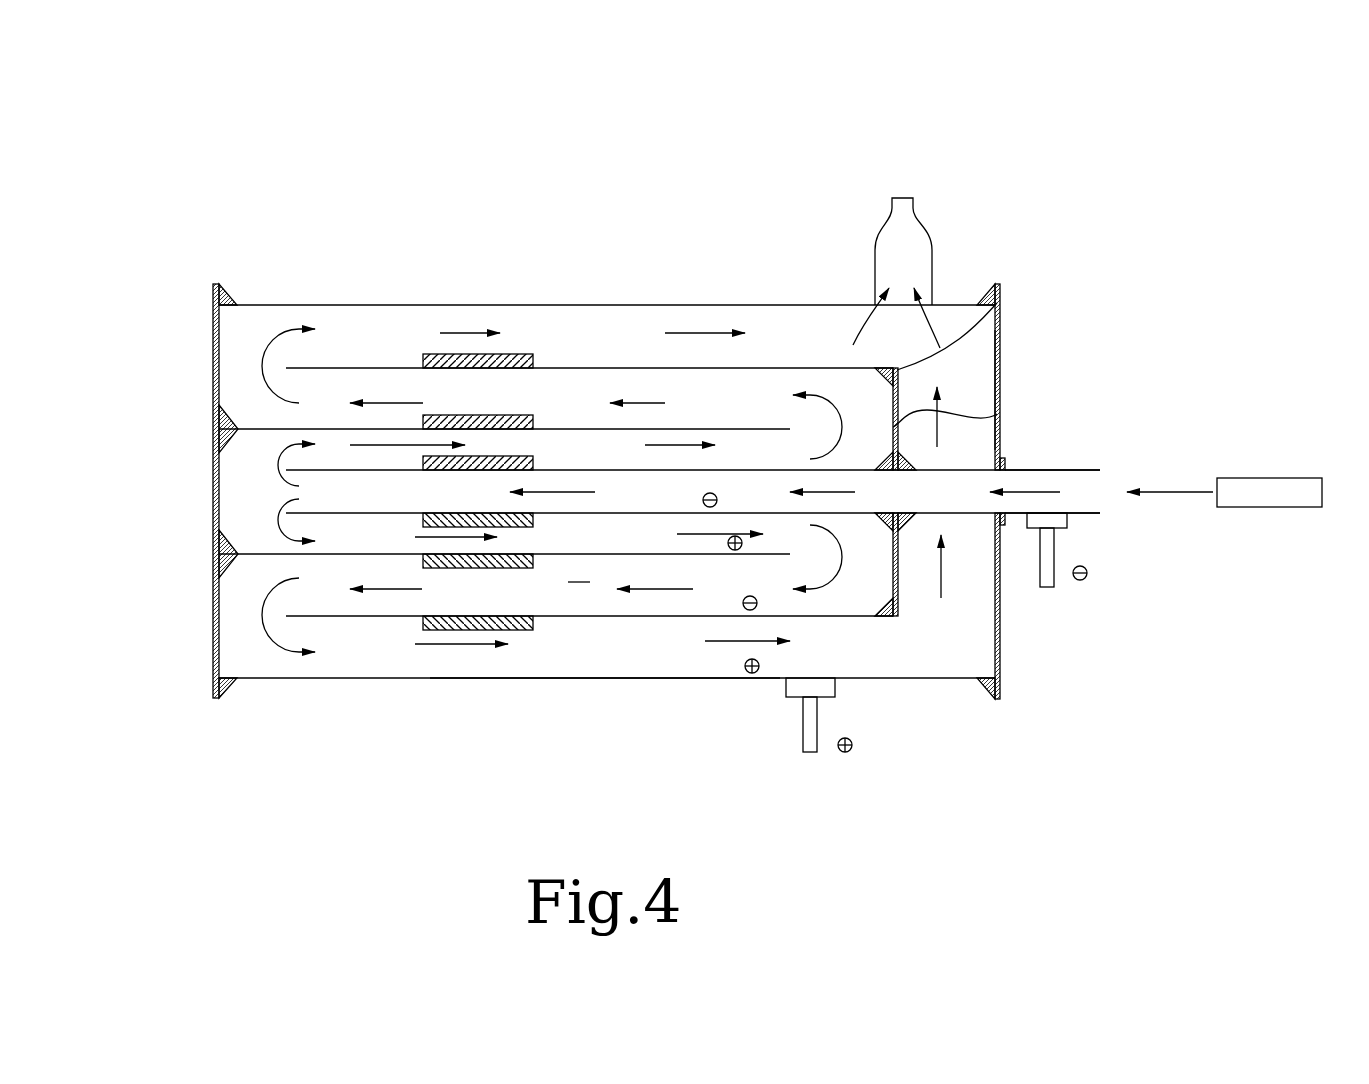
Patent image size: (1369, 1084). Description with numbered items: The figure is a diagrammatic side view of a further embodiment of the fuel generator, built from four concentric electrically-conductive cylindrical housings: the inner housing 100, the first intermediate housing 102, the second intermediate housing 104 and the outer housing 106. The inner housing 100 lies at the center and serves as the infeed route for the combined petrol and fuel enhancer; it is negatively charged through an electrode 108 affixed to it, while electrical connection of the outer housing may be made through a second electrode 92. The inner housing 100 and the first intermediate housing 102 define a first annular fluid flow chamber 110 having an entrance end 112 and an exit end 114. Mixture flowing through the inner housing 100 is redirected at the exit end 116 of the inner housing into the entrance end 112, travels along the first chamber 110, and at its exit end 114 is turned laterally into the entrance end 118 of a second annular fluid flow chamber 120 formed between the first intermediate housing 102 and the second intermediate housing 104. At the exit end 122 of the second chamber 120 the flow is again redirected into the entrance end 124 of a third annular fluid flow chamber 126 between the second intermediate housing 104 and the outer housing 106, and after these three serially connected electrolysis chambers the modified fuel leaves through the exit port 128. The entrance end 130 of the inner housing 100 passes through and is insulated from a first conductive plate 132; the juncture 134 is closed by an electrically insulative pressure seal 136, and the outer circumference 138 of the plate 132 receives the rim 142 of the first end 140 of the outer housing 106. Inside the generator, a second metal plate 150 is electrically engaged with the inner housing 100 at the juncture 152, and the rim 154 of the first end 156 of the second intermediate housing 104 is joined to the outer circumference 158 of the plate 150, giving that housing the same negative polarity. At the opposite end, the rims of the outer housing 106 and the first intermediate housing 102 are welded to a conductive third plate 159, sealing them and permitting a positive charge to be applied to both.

The second electrode 92 is at (810, 752).
The inner housing 100 is at (645, 471).
The first intermediate housing 102 is at (676, 428).
The second intermediate housing 104 is at (622, 368).
The outer housing 106 is at (605, 305).
The electrode 108 is at (1047, 590).
The first annular fluid flow chamber 110 is at (618, 537).
The entrance end of first chamber 112 is at (297, 525).
The exit end of first chamber 114 is at (790, 540).
The exit end of inner housing 116 is at (258, 500).
The entrance end of second chamber 118 is at (783, 585).
The second annular fluid flow chamber 120 is at (558, 603).
The exit end of second chamber 122 is at (252, 597).
The entrance end of third chamber 124 is at (273, 660).
The third annular fluid flow chamber 126 is at (605, 648).
The exit port 128 is at (876, 243).
The entrance end of inner housing 130 is at (1102, 502).
The first conductive plate 132 is at (997, 390).
The juncture 134 is at (1005, 468).
The pressure seal 136 is at (1005, 468).
The outer circumference of first plate 138 is at (997, 290).
The first end of outer housing 140 is at (978, 678).
The rim of first end of outer housing 142 is at (993, 296).
The second metal plate 150 is at (893, 368).
The juncture of second plate and inner housing 152 is at (1003, 467).
The rim of first end of second intermediate housing 154 is at (890, 403).
The first end of second intermediate housing 156 is at (997, 414).
The outer circumference of second plate 158 is at (997, 303).
The third plate 159 is at (212, 316).